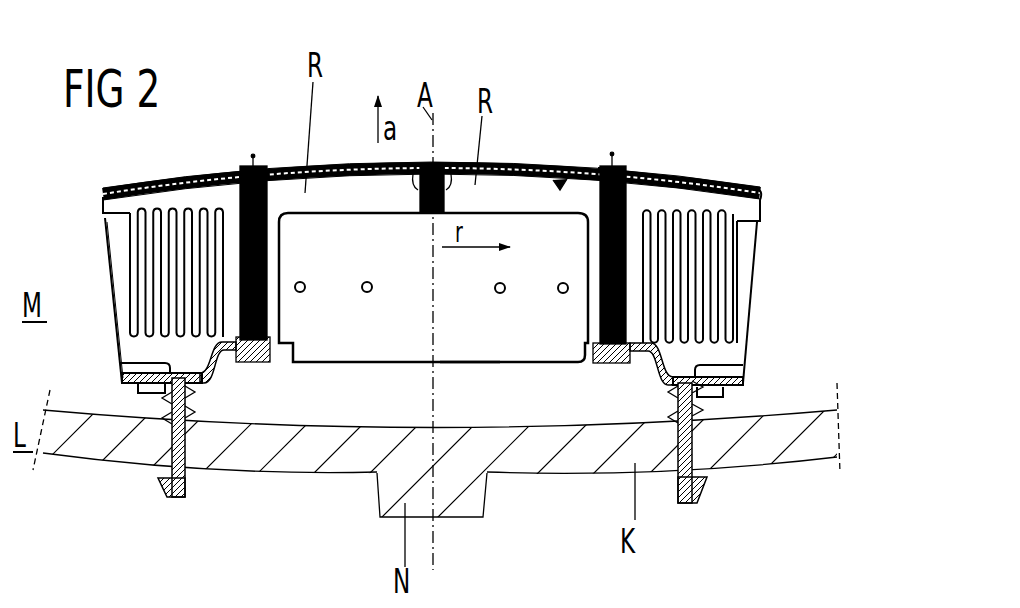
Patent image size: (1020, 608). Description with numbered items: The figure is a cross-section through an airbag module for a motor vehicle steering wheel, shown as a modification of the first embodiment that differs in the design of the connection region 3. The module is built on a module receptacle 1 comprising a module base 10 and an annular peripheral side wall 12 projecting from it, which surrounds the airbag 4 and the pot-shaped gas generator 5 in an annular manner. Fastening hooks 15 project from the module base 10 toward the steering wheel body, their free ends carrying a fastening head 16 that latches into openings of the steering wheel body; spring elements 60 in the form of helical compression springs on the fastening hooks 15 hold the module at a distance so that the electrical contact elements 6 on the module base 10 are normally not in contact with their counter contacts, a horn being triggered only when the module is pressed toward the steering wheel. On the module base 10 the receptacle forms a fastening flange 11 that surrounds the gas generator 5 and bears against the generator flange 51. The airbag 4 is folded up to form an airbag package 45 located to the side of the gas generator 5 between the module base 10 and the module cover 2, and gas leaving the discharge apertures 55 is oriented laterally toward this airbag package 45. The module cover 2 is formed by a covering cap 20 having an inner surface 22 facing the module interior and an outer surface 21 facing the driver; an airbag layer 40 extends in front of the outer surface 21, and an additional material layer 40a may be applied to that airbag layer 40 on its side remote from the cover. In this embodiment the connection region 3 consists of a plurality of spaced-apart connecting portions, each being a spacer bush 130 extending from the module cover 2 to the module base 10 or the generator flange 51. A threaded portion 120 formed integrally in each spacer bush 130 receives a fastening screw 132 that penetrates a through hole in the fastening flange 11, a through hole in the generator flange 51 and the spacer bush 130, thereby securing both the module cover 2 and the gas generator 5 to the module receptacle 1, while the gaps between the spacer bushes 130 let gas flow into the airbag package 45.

The module receptacle 1 is at (208, 388).
The module cover 2 is at (673, 182).
The connection region 3 is at (634, 292).
The airbag 4 is at (126, 237).
The gas generator 5 is at (473, 370).
The electrical contact elements 6 is at (147, 393).
The module base 10 is at (120, 365).
The fastening flange 11 is at (227, 352).
The side wall 12 is at (113, 313).
The fastening hooks 15 is at (180, 473).
The fastening head 16 is at (167, 497).
The covering cap 20 is at (763, 198).
The outer surface 21 is at (520, 167).
The inner surface 22 is at (561, 180).
The airbag layer 40 is at (355, 163).
The additional material layer 40a is at (332, 163).
The airbag package 45 is at (138, 267).
The generator flange 51 is at (294, 362).
The discharge apertures 55 is at (367, 293).
The spring elements 60 is at (187, 413).
The threaded portion 120 is at (607, 167).
The spacer bush 130 is at (273, 200).
The fastening screw 132 is at (245, 173).